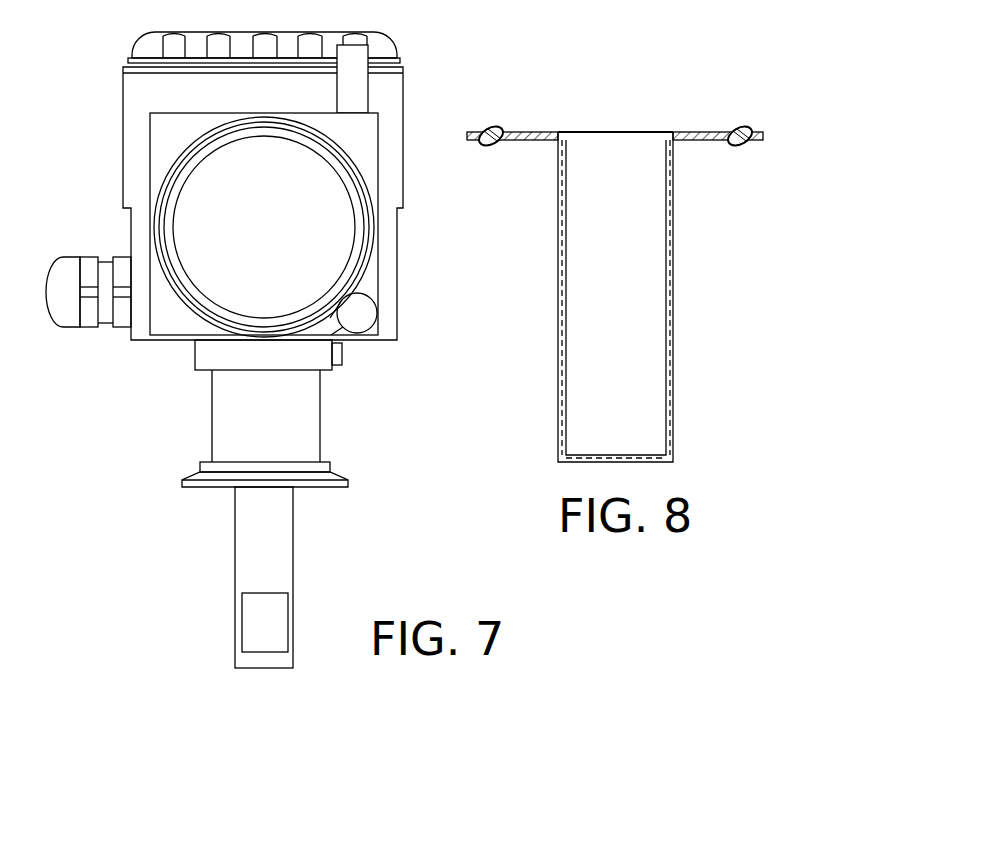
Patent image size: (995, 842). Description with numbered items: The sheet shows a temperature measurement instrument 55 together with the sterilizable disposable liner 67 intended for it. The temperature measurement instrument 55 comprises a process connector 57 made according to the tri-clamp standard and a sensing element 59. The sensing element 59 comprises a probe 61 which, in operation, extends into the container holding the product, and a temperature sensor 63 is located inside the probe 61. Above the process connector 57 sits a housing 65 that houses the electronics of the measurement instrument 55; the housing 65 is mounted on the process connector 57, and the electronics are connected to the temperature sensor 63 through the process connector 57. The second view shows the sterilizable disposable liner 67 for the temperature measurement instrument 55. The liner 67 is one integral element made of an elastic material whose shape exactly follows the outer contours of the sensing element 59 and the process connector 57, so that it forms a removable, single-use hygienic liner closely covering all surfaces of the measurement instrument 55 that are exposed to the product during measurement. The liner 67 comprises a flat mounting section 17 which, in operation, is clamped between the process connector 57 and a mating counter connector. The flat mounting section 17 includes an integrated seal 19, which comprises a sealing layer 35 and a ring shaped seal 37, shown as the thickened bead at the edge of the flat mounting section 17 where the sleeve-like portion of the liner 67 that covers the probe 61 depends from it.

In FIG. 7, the temperature measurement instrument 55 is at (204, 350).
In FIG. 7, the housing 65 is at (138, 160).
In FIG. 7, the process connector 57 is at (190, 478).
In FIG. 7, the sensing element 59 is at (177, 577).
In FIG. 7, the probe 61 is at (253, 569).
In FIG. 7, the temperature sensor 63 is at (278, 634).
In FIG. 8, the sterilizable disposable liner 67 is at (642, 241).
In FIG. 8, the flat mounting section 17 is at (688, 130).
In FIG. 8, the integrated seal 19 is at (688, 297).
In FIG. 8, the sealing layer 35 is at (762, 146).
In FIG. 8, the ring shaped seal 37 is at (740, 150).